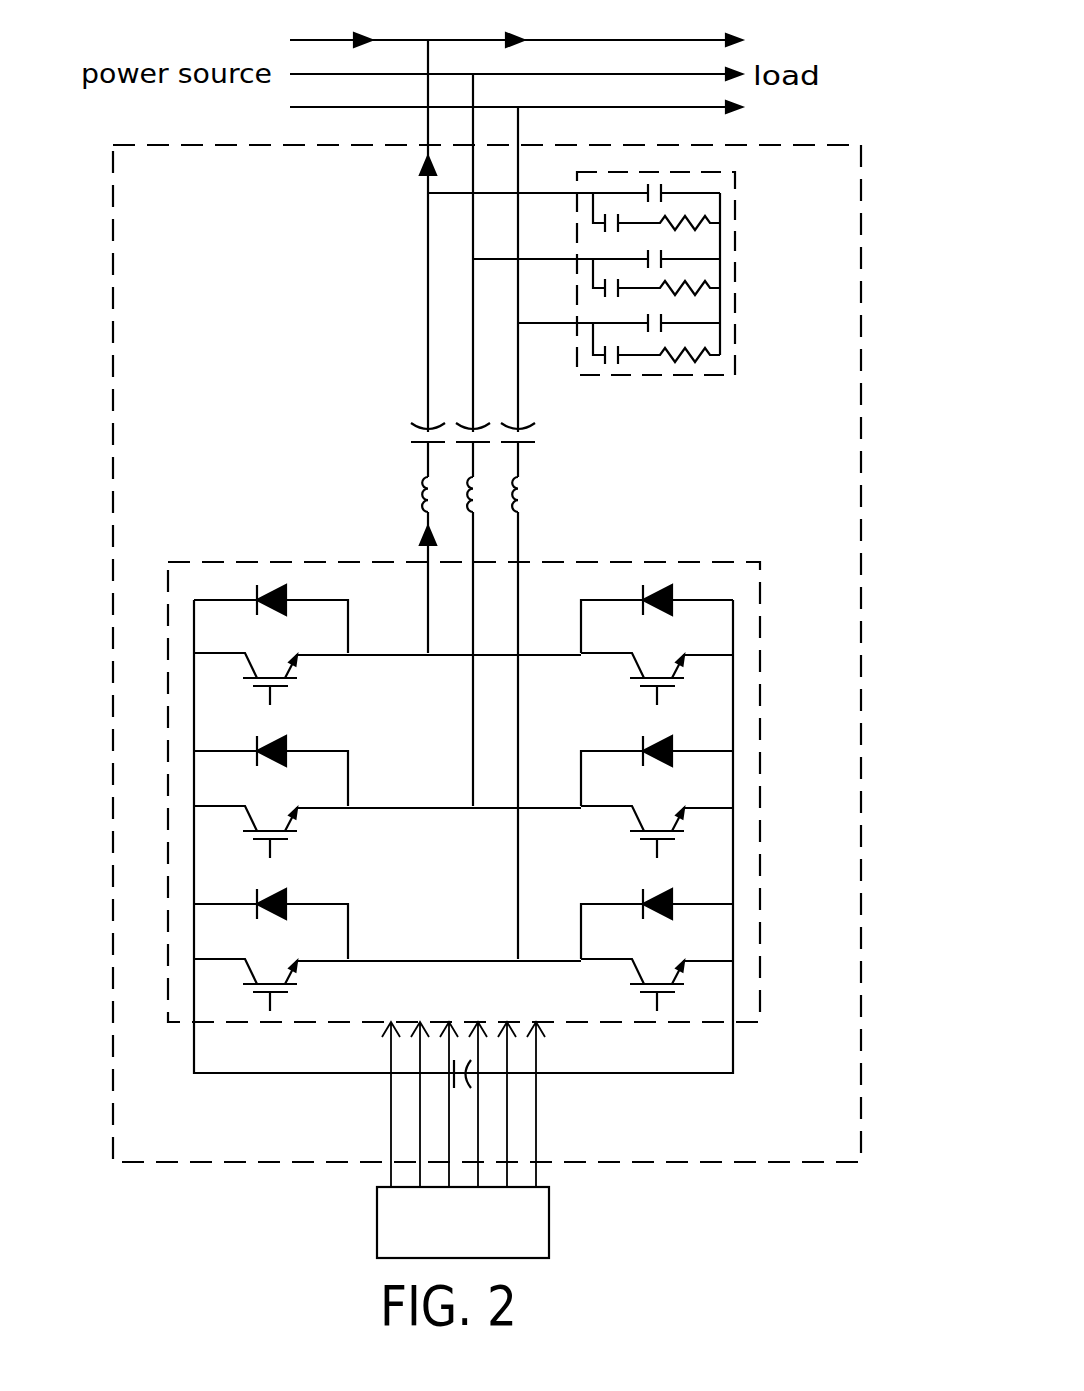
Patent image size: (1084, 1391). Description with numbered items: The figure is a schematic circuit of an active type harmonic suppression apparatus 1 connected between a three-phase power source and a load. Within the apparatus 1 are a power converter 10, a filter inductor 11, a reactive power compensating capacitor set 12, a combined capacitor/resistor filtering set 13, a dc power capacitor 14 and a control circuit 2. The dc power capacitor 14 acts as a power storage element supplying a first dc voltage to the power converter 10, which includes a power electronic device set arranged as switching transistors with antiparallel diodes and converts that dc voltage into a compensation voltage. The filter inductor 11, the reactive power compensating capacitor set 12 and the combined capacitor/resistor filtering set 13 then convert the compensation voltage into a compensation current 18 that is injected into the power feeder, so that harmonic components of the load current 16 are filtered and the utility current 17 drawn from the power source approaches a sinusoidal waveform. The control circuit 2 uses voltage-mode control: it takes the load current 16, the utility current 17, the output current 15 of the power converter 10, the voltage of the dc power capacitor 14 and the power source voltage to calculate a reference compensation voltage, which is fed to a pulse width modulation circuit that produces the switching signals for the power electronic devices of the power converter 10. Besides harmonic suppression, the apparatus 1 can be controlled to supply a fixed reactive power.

The active type harmonic suppression apparatus 1 is at (868, 279).
The control circuit 2 is at (542, 1221).
The power converter 10 is at (682, 549).
The filter inductor 11 is at (445, 492).
The reactive power compensating capacitor set 12 is at (456, 431).
The combined capacitor/resistor filtering set 13 is at (735, 258).
The dc power capacitor 14 is at (462, 1096).
The output current of the power converter 15 is at (410, 537).
The load current 16 is at (516, 23).
The utility current 17 is at (363, 23).
The compensation current 18 is at (406, 169).